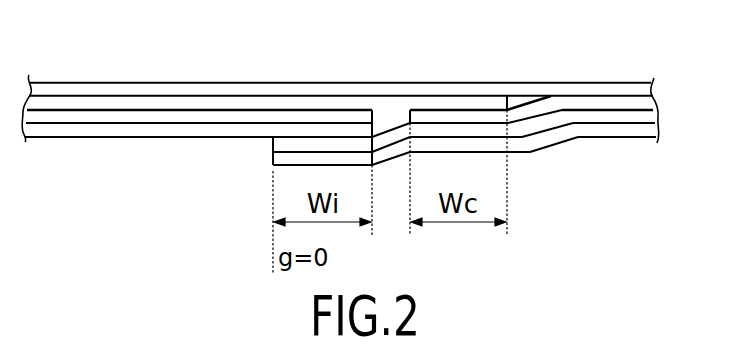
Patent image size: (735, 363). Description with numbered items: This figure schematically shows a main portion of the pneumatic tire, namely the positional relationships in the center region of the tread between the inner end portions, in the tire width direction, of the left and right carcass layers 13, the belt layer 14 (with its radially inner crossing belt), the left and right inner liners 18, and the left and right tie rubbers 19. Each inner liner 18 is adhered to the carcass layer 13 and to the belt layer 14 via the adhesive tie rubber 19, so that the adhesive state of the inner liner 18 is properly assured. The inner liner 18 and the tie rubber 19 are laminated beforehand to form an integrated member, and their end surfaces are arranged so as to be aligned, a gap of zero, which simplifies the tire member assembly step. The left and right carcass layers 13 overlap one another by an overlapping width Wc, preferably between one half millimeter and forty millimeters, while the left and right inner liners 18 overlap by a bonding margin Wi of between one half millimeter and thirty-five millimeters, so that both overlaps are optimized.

The carcass layer 13 is at (74, 110).
The belt layer 14 is at (590, 82).
The inner liner 18 is at (188, 138).
The tie rubber 19 is at (132, 123).